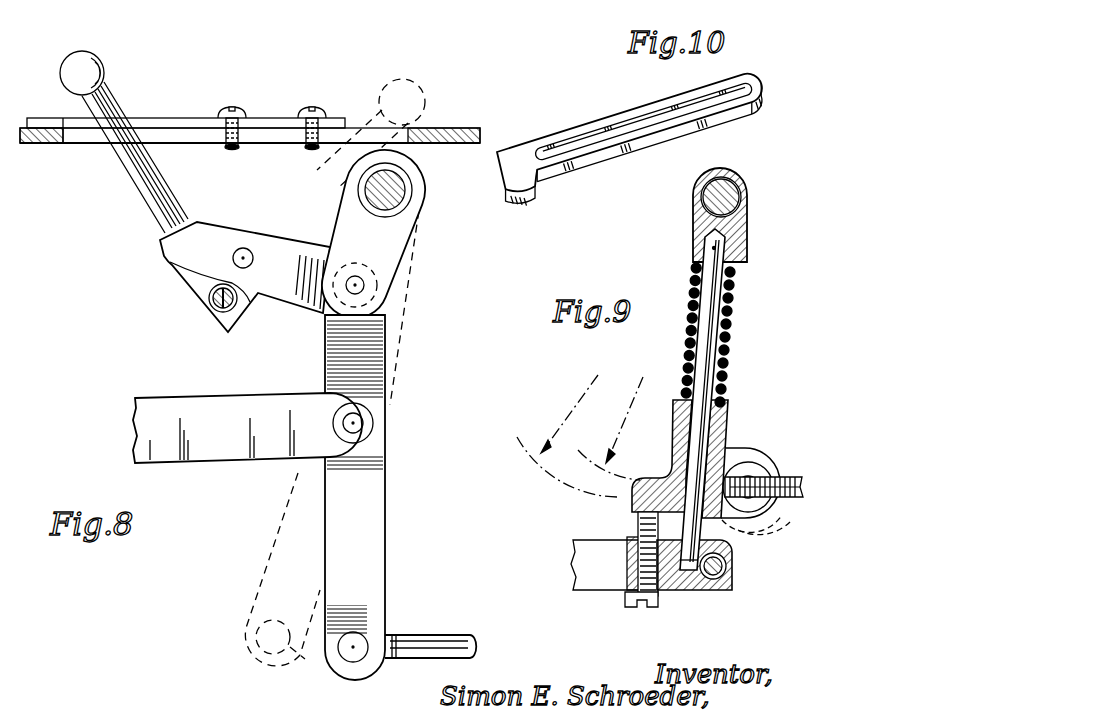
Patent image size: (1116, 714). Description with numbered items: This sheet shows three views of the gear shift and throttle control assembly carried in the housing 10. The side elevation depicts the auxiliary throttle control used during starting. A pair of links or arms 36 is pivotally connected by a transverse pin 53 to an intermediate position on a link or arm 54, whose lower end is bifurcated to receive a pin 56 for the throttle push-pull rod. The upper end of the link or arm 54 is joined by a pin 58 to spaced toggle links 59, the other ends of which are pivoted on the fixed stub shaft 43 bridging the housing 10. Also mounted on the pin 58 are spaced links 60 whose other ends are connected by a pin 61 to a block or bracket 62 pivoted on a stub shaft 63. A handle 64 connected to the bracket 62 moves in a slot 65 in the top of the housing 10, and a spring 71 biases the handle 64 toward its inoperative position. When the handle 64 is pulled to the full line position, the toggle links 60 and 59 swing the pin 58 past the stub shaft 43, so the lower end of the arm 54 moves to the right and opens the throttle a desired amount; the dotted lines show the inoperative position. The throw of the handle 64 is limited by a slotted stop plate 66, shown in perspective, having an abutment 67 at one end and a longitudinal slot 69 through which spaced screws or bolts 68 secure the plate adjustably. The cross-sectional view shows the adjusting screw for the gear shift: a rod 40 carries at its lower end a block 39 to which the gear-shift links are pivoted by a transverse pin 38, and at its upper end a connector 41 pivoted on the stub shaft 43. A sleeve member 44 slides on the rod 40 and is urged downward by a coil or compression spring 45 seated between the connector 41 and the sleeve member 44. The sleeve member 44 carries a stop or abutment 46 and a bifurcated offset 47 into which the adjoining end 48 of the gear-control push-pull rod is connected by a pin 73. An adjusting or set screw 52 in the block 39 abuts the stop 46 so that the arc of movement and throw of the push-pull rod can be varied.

In FIG. 8, the housing 10 is at (454, 127).
In FIG. 8, the links or arms 36 is at (134, 416).
In FIG. 9, the transverse pin 38 is at (714, 580).
In FIG. 9, the block 39 is at (734, 585).
In FIG. 9, the rod 40 is at (712, 357).
In FIG. 9, the connector 41 is at (749, 224).
In FIG. 8, the fixed stub shaft 43 is at (402, 188).
In FIG. 9, the fixed stub shaft 43 is at (742, 181).
In FIG. 9, the sleeve member 44 is at (729, 448).
In FIG. 9, the coil or compression spring 45 is at (734, 304).
In FIG. 9, the stop or abutment 46 is at (628, 496).
In FIG. 9, the bifurcated offset 47 is at (752, 460).
In FIG. 9, the adjoining end of control or push-pull rod 48 is at (798, 502).
In FIG. 9, the adjusting or set screw 52 is at (622, 602).
In FIG. 8, the transverse pin 53 is at (356, 422).
In FIG. 8, the link or arm 54 is at (388, 488).
In FIG. 8, the pin 56 is at (348, 651).
In FIG. 8, the pin 58 is at (357, 286).
In FIG. 8, the toggle links 59 is at (408, 250).
In FIG. 8, the links 60 is at (300, 306).
In FIG. 8, the pin 61 is at (244, 247).
In FIG. 8, the block or bracket 62 is at (178, 292).
In FIG. 8, the stub shaft 63 is at (215, 307).
In FIG. 8, the handle 64 is at (132, 193).
In FIG. 8, the slot 65 is at (210, 143).
In FIG. 8, the slotted stop plate 66 is at (204, 118).
In FIG. 10, the slotted stop plate 66 is at (636, 112).
In FIG. 10, the abutment 67 is at (532, 198).
In FIG. 8, the screws or bolts 68 is at (240, 108).
In FIG. 8, the longitudinal slot 69 is at (149, 118).
In FIG. 10, the longitudinal slot 69 is at (567, 140).
In FIG. 8, the spring 71 is at (165, 262).
In FIG. 9, the pin 73 is at (762, 472).